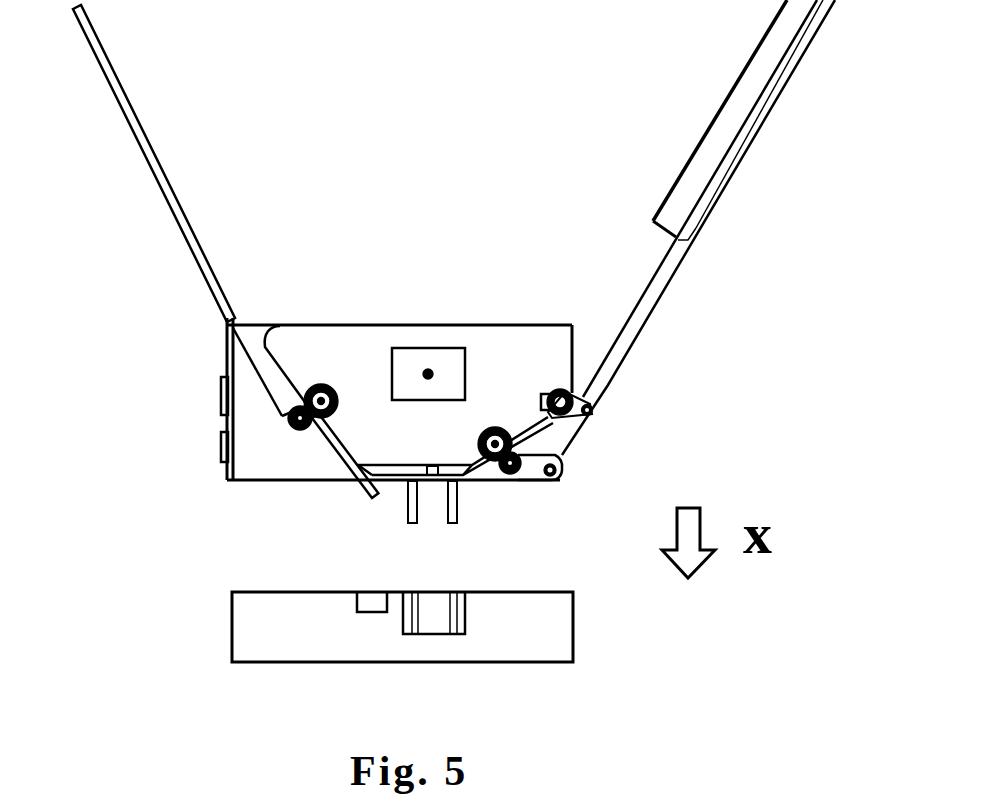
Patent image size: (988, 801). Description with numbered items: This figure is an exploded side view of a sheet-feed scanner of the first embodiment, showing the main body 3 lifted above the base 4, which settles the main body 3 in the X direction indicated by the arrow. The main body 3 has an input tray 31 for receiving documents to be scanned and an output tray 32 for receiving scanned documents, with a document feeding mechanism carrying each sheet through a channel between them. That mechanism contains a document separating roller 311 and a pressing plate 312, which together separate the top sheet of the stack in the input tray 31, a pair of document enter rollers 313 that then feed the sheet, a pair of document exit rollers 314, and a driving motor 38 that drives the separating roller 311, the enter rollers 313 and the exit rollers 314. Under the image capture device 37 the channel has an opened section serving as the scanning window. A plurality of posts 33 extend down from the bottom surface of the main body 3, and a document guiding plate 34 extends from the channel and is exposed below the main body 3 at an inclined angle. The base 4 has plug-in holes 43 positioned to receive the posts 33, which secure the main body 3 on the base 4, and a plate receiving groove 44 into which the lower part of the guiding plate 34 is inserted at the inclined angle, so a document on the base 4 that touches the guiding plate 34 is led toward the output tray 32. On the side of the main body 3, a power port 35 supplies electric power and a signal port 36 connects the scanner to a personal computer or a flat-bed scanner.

The main body 3 is at (412, 217).
The input tray 31 is at (778, 40).
The output tray 32 is at (122, 108).
The posts 33 is at (452, 503).
The document guiding plate 34 is at (366, 498).
The power port 35 is at (223, 392).
The signal port 36 is at (225, 466).
The image capture device 37 is at (433, 466).
The driving motor 38 is at (450, 357).
The document separating roller 311 is at (558, 390).
The pressing plate 312 is at (597, 413).
The document enter rollers 313 is at (520, 442).
The document exit rollers 314 is at (321, 383).
The base 4 is at (590, 650).
The plug-in holes 43 is at (498, 648).
The plate receiving groove 44 is at (358, 604).